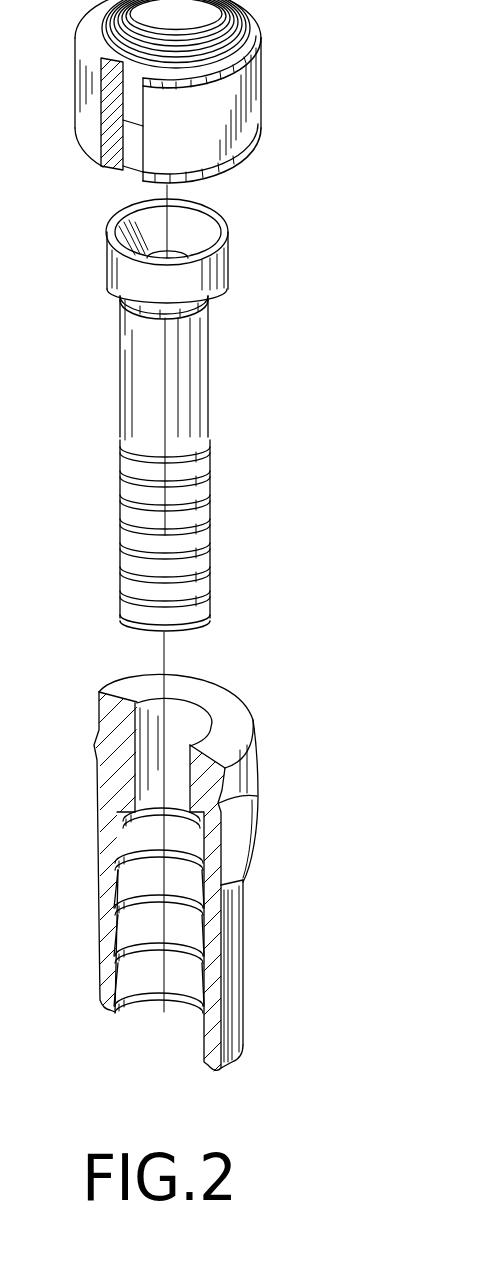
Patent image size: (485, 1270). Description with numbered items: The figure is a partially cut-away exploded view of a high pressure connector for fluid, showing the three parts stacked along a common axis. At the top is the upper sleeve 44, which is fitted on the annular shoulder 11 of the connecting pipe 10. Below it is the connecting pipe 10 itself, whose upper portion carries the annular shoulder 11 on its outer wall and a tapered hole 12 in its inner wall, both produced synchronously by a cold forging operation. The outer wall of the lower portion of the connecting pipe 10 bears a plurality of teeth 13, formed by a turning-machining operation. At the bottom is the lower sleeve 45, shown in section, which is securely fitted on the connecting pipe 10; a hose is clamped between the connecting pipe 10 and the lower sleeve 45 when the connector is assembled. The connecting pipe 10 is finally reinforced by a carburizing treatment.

The connecting pipe 10 is at (205, 362).
The annular shoulder 11 is at (217, 270).
The tapered hole 12 is at (207, 232).
The teeth 13 is at (205, 468).
The upper sleeve 44 is at (255, 95).
The lower sleeve 45 is at (103, 783).